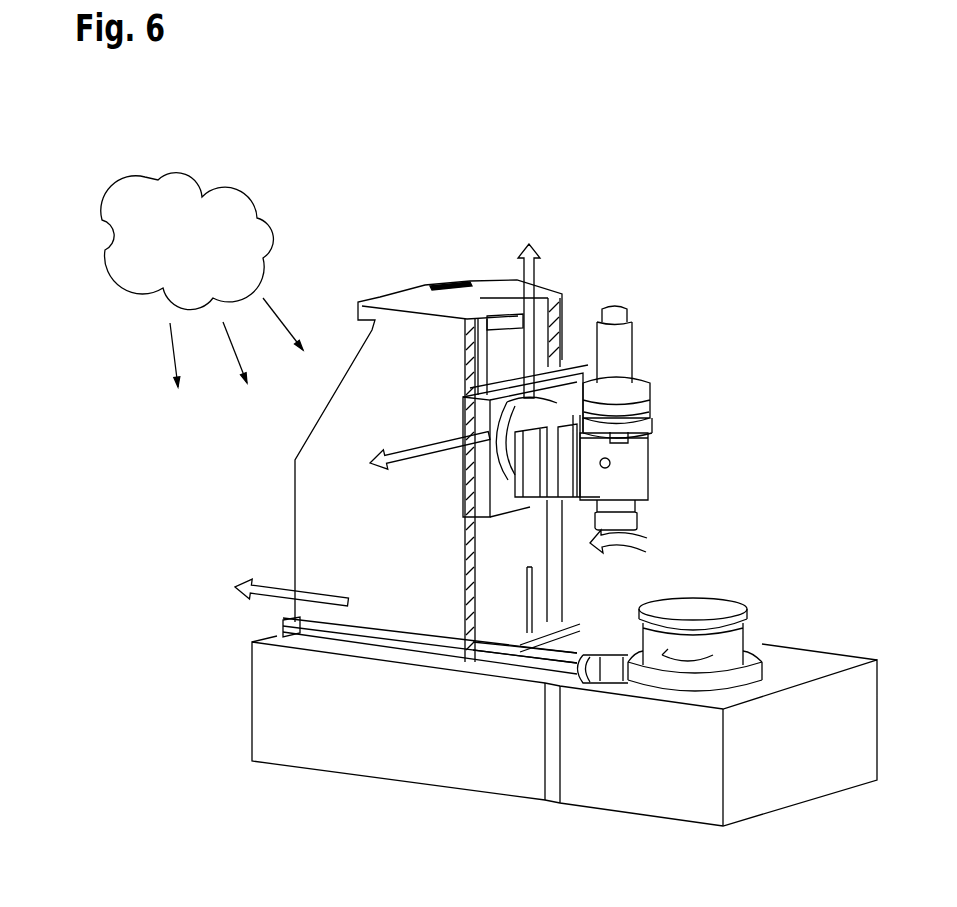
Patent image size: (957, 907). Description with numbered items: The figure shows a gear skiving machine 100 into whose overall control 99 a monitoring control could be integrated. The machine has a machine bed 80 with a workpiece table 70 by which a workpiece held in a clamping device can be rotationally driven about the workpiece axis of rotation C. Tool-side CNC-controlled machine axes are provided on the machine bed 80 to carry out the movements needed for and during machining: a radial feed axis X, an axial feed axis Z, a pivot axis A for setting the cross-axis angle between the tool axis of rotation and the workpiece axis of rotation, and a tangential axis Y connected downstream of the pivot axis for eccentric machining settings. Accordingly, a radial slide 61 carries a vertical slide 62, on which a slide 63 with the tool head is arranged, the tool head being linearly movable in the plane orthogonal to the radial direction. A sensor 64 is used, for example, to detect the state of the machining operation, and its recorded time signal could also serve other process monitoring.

The radial slide 61 is at (310, 499).
The vertical slide 62 is at (642, 429).
The slide with tool head 63 is at (557, 477).
The sensor 64 is at (613, 462).
The workpiece table 70 is at (757, 650).
The machine bed 80 is at (792, 783).
The control 99 is at (130, 220).
The machine tool 100 is at (848, 305).